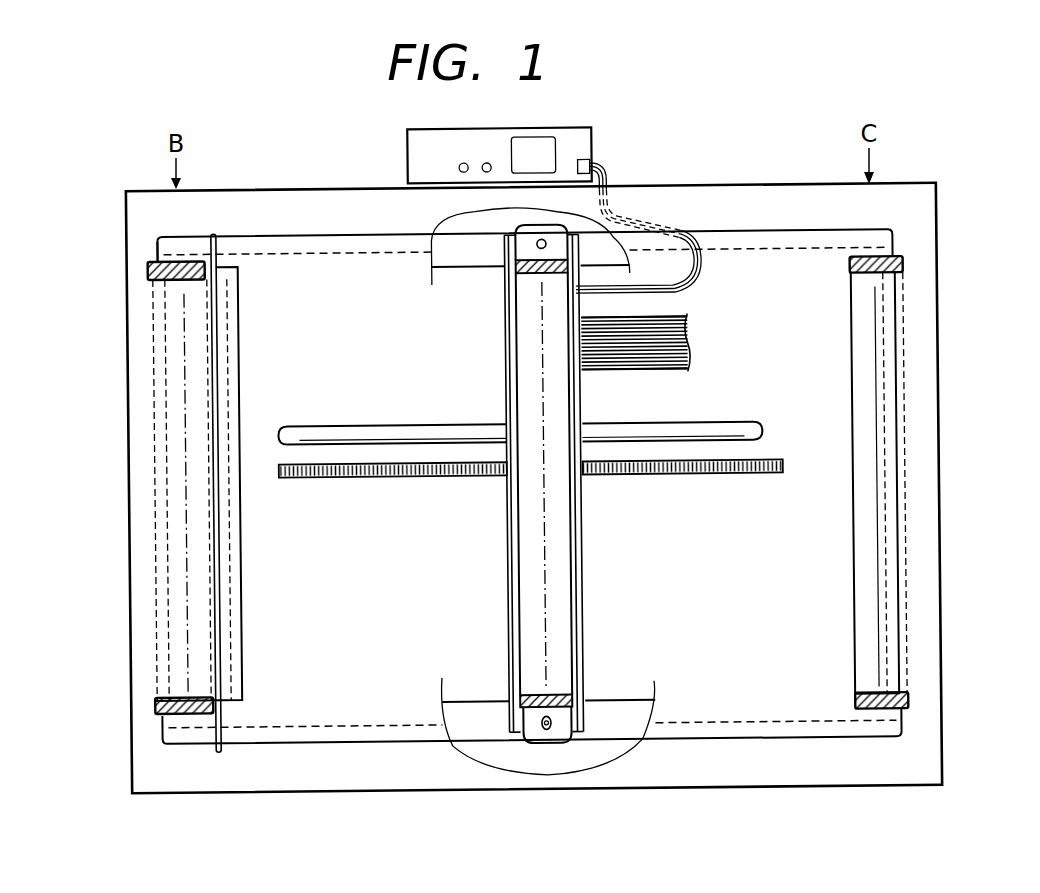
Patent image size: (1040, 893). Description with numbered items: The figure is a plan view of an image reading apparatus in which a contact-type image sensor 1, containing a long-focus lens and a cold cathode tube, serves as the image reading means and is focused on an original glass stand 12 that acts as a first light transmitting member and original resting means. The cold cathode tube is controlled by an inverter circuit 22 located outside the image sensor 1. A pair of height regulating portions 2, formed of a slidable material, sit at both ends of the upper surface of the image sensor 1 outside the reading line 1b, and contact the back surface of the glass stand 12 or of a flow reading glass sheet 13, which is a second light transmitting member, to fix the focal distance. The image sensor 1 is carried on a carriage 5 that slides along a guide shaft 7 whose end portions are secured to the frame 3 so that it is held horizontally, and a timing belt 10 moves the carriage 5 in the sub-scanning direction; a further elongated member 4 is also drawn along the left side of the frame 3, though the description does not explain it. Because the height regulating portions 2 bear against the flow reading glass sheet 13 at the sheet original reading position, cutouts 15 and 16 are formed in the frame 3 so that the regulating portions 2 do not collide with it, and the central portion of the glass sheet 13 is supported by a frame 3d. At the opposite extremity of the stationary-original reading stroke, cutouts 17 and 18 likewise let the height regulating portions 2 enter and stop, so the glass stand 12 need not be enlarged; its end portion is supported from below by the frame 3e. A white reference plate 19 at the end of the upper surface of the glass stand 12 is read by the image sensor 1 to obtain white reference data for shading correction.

The contact-type image sensor 1 is at (530, 668).
The reading line 1b is at (570, 556).
The height regulating portions 2 is at (172, 258).
The frame 3 is at (896, 196).
The frame 3d is at (160, 444).
The frame (support portion) 3e is at (902, 360).
The shaft 4 is at (212, 235).
The carriage 5 is at (617, 232).
The guide shaft 7 is at (717, 427).
The timing belt 10 is at (734, 476).
The original glass stand 12 is at (275, 242).
The flow reading glass sheet 13 is at (187, 238).
The cutout 15 is at (150, 264).
The cutout 16 is at (160, 706).
The cutout 17 is at (907, 254).
The cutout 18 is at (912, 694).
The white reference plate 19 is at (236, 746).
The inverter circuit 22 is at (578, 143).